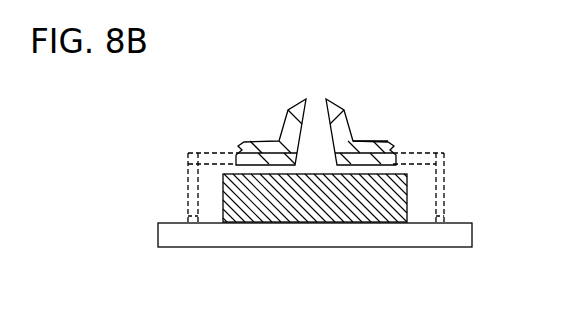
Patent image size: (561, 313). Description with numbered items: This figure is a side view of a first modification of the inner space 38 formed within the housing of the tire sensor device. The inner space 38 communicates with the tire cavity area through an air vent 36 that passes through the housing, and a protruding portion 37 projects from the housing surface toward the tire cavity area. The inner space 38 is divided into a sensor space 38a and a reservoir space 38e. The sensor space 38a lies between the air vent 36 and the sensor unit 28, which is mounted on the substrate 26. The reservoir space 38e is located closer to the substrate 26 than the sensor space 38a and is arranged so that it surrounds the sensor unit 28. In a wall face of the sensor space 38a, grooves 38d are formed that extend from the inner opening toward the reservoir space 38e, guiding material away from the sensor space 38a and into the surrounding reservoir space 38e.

The substrate 26 is at (425, 233).
The sensor unit 28 is at (304, 223).
The air vent 36 is at (317, 105).
The protruding portion 37 is at (343, 121).
The inner space 38 is at (395, 204).
The sensor space 38a is at (383, 172).
The grooves 38d is at (200, 152).
The reservoir space 38e is at (215, 217).